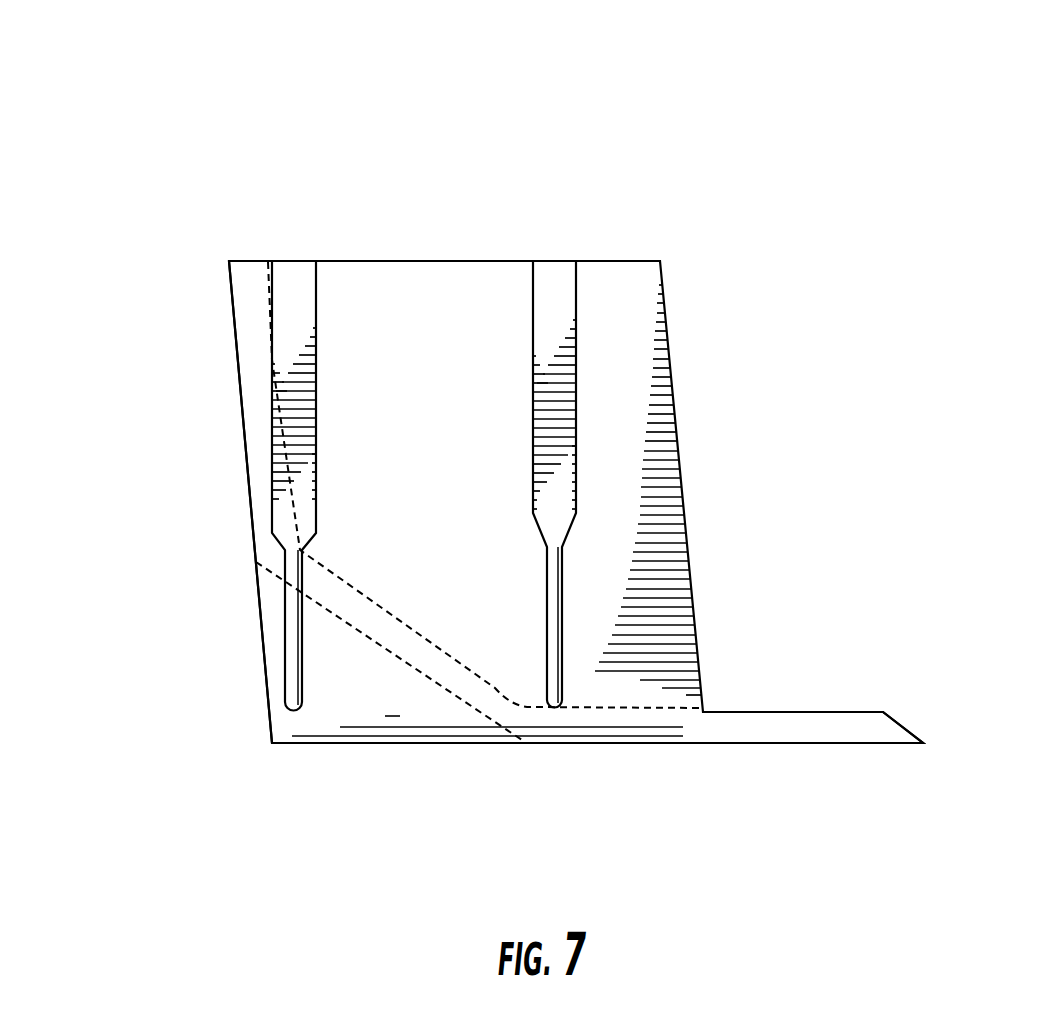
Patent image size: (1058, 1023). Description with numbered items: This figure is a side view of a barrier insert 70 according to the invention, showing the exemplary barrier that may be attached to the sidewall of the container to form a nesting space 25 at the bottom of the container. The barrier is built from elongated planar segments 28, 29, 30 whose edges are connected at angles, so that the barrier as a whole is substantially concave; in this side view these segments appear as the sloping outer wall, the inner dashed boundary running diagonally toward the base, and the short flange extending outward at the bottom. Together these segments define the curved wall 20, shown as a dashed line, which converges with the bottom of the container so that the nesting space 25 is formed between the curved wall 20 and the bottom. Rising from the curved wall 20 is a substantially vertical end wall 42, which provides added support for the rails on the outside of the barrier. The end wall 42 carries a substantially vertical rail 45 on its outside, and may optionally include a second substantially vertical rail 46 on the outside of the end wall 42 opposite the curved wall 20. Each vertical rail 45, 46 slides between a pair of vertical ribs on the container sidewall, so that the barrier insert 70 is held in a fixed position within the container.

The airfoil component assembly 70 is at (492, 147).
The end wall 42 is at (390, 262).
The vertical rail 45 is at (290, 277).
The second vertical rail 46 is at (544, 262).
The elongated planar segment 28 is at (252, 360).
The curved wall 20 is at (400, 618).
The elongated planar segment 29 is at (287, 560).
The nesting space 25 is at (317, 676).
The elongated planar segment 30 is at (775, 725).